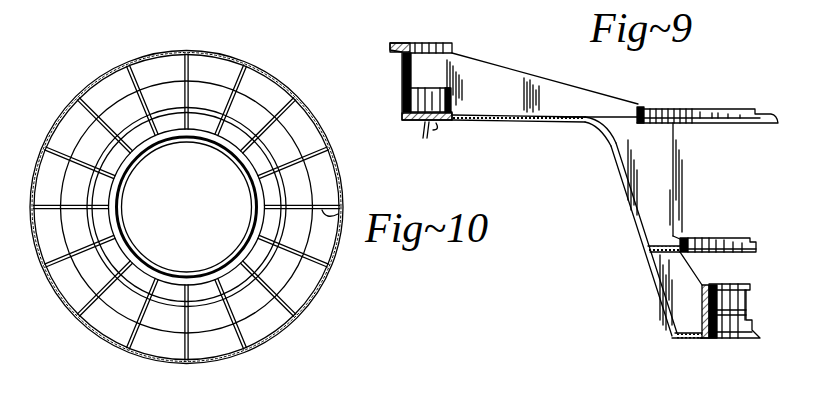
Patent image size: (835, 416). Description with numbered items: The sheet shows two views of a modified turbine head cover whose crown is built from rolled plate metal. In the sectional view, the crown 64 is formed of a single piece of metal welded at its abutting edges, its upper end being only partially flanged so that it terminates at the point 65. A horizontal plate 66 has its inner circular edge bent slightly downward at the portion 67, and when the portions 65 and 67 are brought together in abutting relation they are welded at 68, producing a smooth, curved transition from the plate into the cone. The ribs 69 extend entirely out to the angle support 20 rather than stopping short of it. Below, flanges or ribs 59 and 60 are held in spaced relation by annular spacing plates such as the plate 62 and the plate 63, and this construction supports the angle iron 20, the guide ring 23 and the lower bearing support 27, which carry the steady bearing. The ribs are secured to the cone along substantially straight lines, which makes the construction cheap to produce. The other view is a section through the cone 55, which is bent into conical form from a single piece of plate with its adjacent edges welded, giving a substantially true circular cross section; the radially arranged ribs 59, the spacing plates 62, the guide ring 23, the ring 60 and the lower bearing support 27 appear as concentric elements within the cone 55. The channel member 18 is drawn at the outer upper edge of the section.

In FIG. 9, the channel member 18 is at (431, 43).
In FIG. 9, the angle iron 20 is at (645, 107).
In FIG. 10, the guide ring 23 is at (263, 150).
In FIG. 9, the guide ring 23 is at (681, 240).
In FIG. 10, the lower bearing support 27 is at (256, 203).
In FIG. 9, the lower bearing support 27 is at (712, 339).
In FIG. 10, the cone 55 is at (257, 66).
In FIG. 10, the ribs 59 is at (283, 112).
In FIG. 9, the ribs 59 is at (663, 183).
In FIG. 10, the ribs 60 is at (267, 228).
In FIG. 9, the ribs 60 is at (683, 282).
In FIG. 10, the annular spacing plate 62 is at (298, 177).
In FIG. 9, the annular spacing plate 63 is at (699, 339).
In FIG. 9, the crown 64 is at (633, 214).
In FIG. 9, the point 65 is at (595, 126).
In FIG. 9, the horizontal plate 66 is at (484, 120).
In FIG. 9, the bent edge portion 67 is at (568, 119).
In FIG. 9, the weld 68 is at (589, 119).
In FIG. 9, the ribs 69 is at (512, 82).